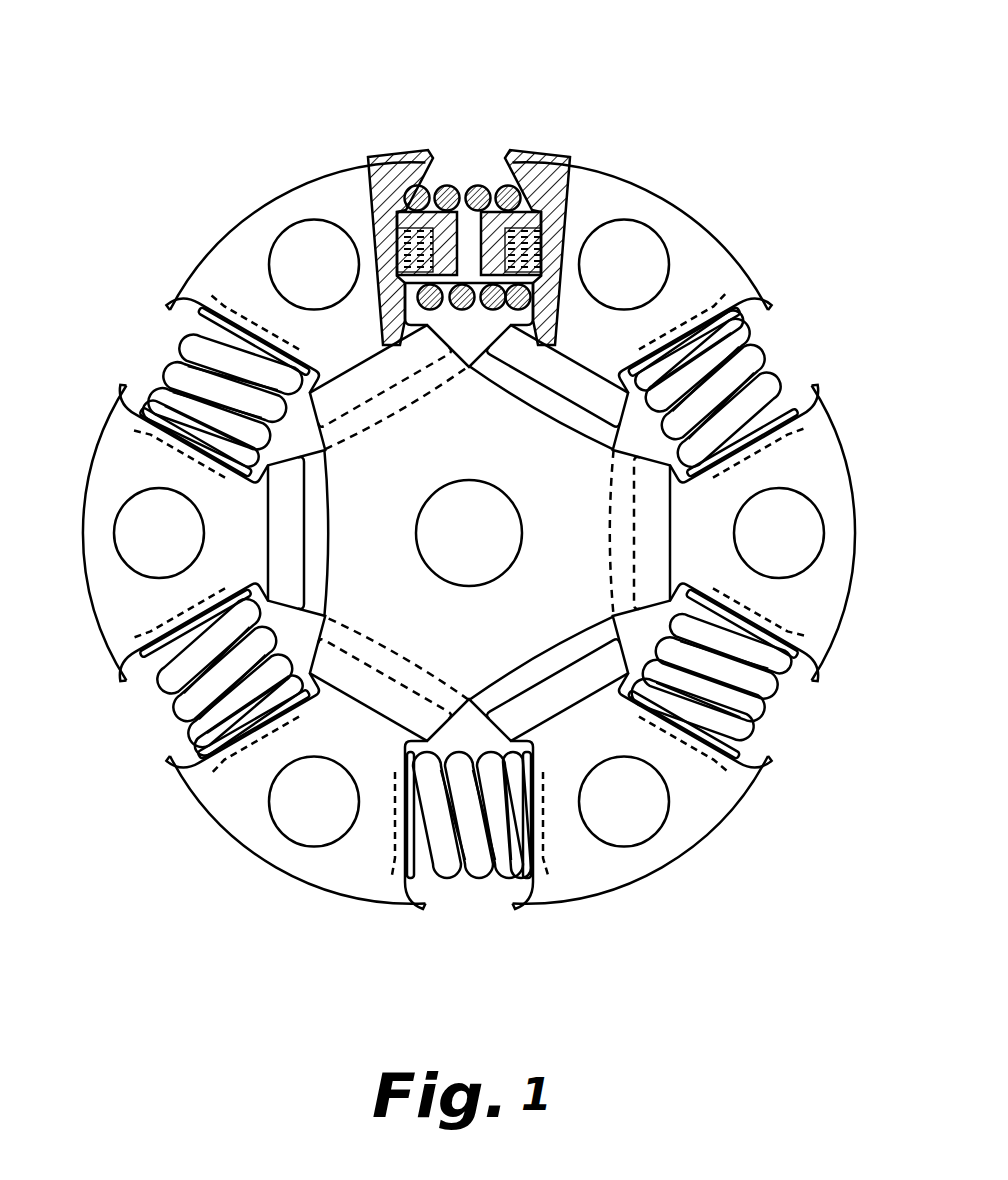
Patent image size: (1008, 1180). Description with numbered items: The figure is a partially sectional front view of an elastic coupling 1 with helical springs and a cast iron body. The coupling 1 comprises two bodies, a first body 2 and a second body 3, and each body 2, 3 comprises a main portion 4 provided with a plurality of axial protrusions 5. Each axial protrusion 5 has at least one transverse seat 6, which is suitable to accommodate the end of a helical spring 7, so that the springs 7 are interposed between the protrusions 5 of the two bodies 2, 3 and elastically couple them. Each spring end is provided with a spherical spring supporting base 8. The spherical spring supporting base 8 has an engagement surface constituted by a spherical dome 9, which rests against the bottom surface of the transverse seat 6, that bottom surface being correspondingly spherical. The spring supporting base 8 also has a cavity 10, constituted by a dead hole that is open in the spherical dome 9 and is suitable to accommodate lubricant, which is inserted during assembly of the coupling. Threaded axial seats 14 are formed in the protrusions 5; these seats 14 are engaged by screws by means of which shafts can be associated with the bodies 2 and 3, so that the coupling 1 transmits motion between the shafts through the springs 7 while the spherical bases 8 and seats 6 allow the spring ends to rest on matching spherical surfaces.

The coupling 1 is at (764, 116).
The first body 2 is at (288, 176).
The second body 3 is at (600, 162).
The main portion 4 is at (555, 606).
The axial protrusion 5 is at (736, 262).
The transverse seat 6 is at (440, 185).
The helical spring 7 is at (474, 185).
The spherical spring supporting base 8 is at (398, 205).
The spherical dome 9 is at (404, 232).
The cavity 10 is at (404, 249).
The threaded axial seat 14 is at (282, 265).